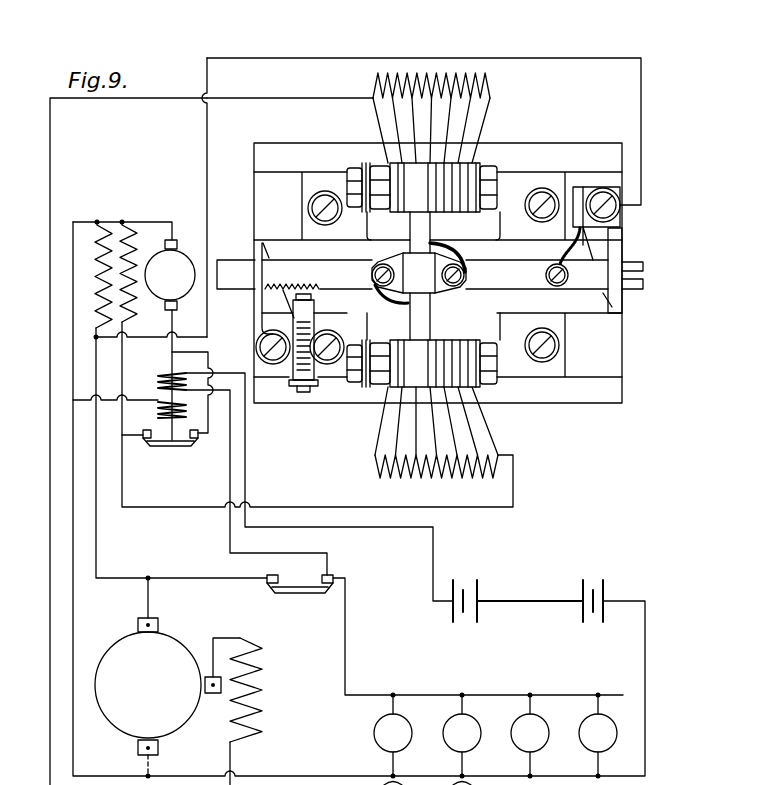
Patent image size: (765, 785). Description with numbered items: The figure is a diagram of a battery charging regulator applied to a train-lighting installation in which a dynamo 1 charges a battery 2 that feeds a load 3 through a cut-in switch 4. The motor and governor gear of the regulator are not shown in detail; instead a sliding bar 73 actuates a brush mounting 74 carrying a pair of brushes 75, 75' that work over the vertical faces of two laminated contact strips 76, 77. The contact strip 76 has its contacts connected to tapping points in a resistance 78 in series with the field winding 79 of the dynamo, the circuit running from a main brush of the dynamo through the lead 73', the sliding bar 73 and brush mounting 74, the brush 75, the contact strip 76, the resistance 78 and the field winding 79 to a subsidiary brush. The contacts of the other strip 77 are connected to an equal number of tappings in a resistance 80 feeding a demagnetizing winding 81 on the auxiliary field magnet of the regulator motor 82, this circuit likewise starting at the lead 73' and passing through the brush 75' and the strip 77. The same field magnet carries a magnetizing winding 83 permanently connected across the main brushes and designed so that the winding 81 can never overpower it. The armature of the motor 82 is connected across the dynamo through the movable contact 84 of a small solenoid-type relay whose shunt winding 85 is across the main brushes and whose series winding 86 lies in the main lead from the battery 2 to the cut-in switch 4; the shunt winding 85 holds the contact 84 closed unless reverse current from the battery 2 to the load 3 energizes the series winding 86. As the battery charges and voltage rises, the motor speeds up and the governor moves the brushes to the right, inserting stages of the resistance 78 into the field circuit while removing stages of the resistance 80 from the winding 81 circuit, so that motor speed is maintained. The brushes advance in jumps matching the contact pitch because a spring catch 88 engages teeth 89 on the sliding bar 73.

The dynamo 1 is at (187, 650).
The battery 2 is at (483, 612).
The load 3 is at (390, 737).
The cut-in switch 4 is at (290, 600).
The sliding bar 73 is at (430, 270).
The lead 73' is at (424, 111).
The brush mounting 74 is at (419, 276).
The brush 75 is at (377, 203).
The brush 75' is at (380, 346).
The contact strip 76 is at (433, 213).
The contact strip 77 is at (430, 341).
The resistance 78 is at (484, 85).
The field winding 79 is at (262, 690).
The resistance 80 is at (422, 480).
The demagnetizing winding 81 is at (129, 260).
The regulator motor 82 is at (170, 275).
The magnetizing winding 83 is at (97, 263).
The movable contact 84 is at (167, 446).
The shunt winding 85 is at (178, 410).
The series winding 86 is at (178, 384).
The spring catch 88 is at (311, 297).
The teeth 89 is at (292, 276).